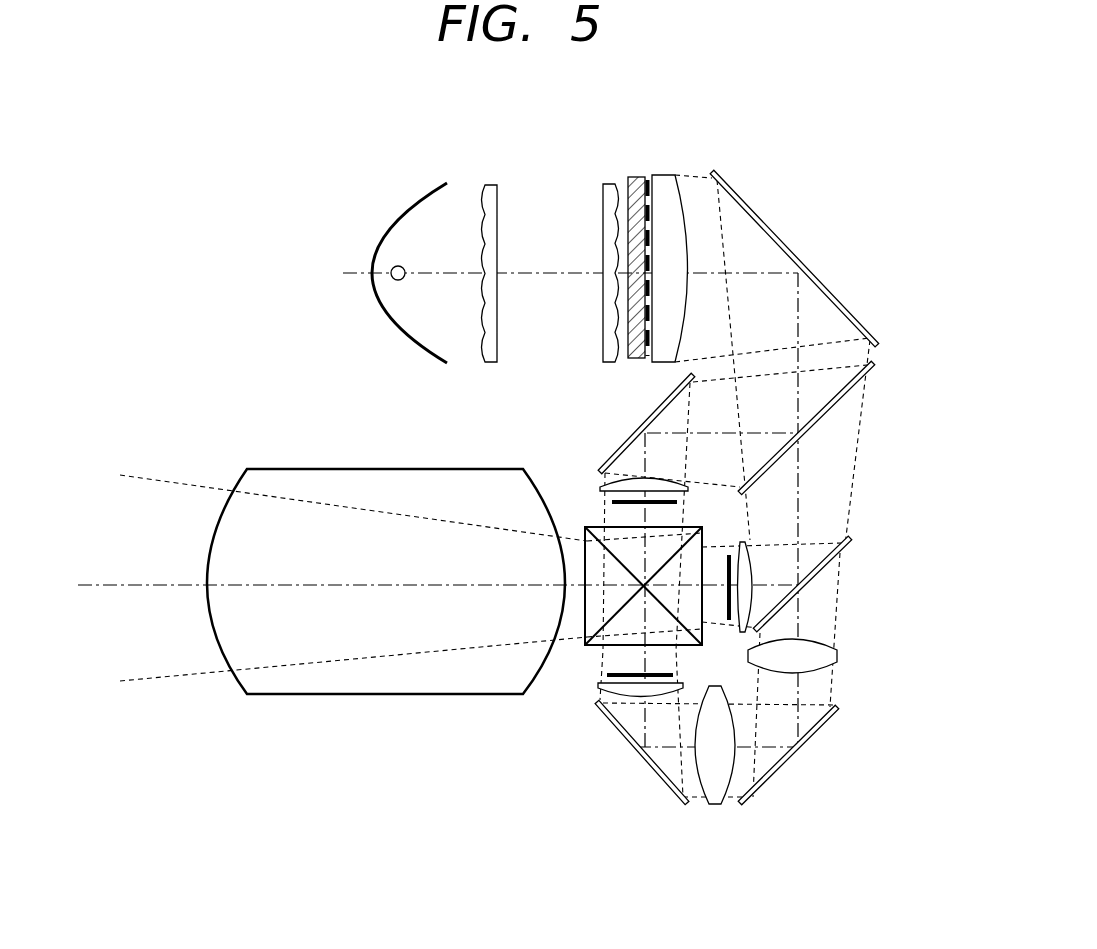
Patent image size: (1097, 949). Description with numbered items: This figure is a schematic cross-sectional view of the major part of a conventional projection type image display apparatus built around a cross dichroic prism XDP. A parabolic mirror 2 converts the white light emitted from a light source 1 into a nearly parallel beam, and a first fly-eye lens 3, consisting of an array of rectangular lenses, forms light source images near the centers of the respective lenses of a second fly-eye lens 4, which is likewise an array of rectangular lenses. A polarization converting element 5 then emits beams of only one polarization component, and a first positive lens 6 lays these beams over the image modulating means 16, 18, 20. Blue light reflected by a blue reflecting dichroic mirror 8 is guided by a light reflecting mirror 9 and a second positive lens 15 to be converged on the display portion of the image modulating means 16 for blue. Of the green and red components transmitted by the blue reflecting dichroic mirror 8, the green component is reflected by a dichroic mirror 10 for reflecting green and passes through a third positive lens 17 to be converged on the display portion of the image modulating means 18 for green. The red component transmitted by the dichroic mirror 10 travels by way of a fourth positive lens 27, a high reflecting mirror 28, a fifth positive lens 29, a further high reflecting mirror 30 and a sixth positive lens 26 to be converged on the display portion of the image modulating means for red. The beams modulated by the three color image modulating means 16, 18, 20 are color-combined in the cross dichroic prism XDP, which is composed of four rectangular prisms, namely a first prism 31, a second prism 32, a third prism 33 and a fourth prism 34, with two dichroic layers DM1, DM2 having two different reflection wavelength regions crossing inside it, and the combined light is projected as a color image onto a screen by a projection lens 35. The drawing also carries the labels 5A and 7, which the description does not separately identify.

The light source 1 is at (392, 269).
The parabolic mirror 2 is at (415, 203).
The first fly-eye lens 3 is at (493, 185).
The second fly-eye lens 4 is at (613, 183).
The polarization converting element 5 is at (637, 177).
The half-wave plate array of polarization conversion element 5A is at (648, 177).
The first positive lens 6 is at (665, 174).
The mirror 7 is at (745, 197).
The blue reflecting dichroic mirror 8 is at (872, 370).
The light reflecting mirror 9 is at (652, 421).
The dichroic mirror 10 is at (849, 548).
The second positive lens 15 is at (614, 503).
The image modulating means 16 is at (604, 490).
The third positive lens 17 is at (741, 541).
The image modulating means 18 is at (728, 560).
The image modulating means 20 is at (610, 667).
The sixth positive lens 26 is at (604, 686).
The fourth positive lens 27 is at (840, 658).
The high reflecting mirror 28 is at (795, 752).
The fifth positive lens 29 is at (713, 805).
The high reflecting mirror 30 is at (637, 753).
The first prism 31 is at (688, 503).
The second prism 32 is at (758, 640).
The third prism 33 is at (592, 648).
The fourth prism 34 is at (588, 544).
The projection lens 35 is at (325, 467).
The dichroic layer DM1 is at (585, 580).
The dichroic layer DM2 is at (585, 588).
The cross dichroic prism XDP is at (705, 526).